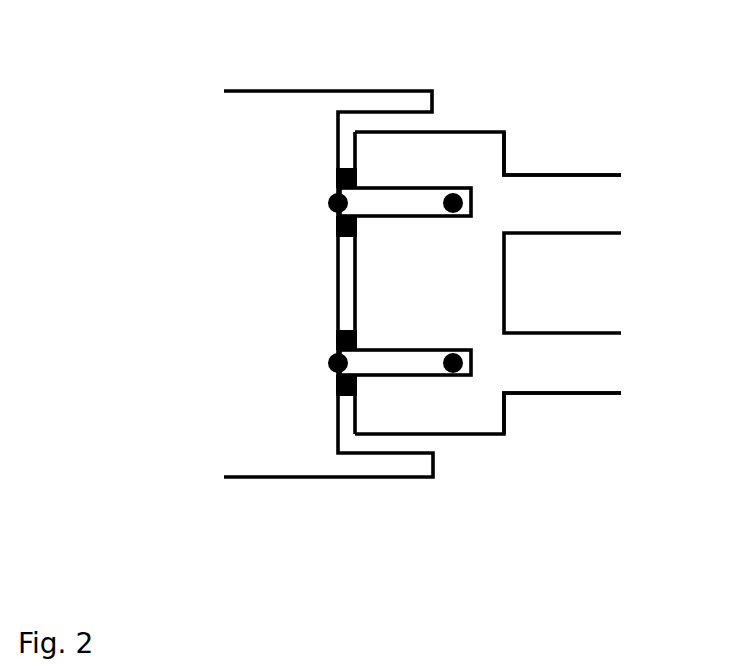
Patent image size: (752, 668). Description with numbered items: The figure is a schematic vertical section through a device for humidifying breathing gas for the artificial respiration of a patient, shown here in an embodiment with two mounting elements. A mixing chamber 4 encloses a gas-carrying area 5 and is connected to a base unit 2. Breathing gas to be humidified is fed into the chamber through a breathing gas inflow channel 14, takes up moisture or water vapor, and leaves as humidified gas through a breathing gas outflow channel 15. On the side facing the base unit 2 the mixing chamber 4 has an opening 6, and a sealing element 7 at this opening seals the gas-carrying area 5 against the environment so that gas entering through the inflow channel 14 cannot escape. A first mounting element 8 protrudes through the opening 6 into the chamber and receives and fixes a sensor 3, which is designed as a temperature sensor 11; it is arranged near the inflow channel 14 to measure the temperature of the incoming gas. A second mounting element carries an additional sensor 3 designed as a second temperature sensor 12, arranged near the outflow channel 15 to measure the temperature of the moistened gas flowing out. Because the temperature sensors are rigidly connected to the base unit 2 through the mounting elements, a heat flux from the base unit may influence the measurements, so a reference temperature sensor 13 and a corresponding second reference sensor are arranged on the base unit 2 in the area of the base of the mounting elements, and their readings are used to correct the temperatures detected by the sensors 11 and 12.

The base unit 2 is at (318, 453).
The sensor 3 is at (460, 192).
The mixing chamber 4 is at (393, 397).
The gas-carrying area 5 is at (414, 283).
The opening 6 is at (358, 182).
The sealing element 7 is at (338, 172).
The mounting element 8 is at (395, 198).
The temperature sensor 11 is at (453, 203).
The second temperature sensor 12 is at (455, 373).
The reference temperature sensor 13 is at (333, 205).
The breathing gas inflow channel 14 is at (618, 207).
The breathing gas outflow channel 15 is at (622, 358).